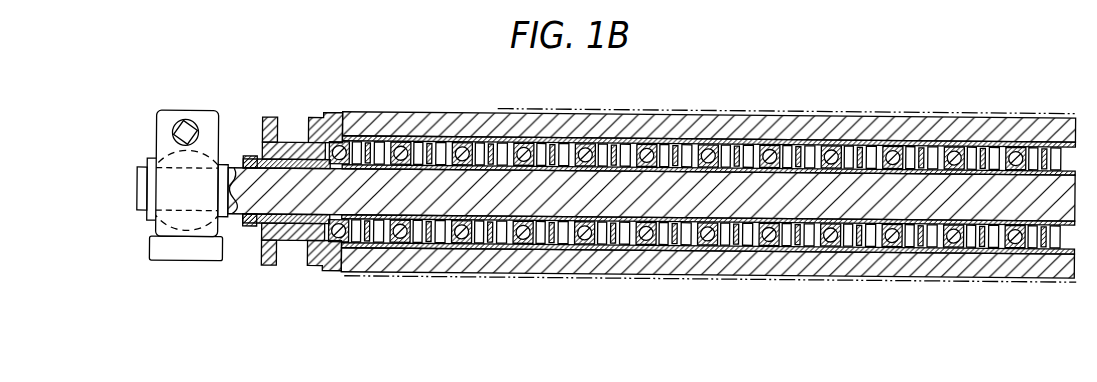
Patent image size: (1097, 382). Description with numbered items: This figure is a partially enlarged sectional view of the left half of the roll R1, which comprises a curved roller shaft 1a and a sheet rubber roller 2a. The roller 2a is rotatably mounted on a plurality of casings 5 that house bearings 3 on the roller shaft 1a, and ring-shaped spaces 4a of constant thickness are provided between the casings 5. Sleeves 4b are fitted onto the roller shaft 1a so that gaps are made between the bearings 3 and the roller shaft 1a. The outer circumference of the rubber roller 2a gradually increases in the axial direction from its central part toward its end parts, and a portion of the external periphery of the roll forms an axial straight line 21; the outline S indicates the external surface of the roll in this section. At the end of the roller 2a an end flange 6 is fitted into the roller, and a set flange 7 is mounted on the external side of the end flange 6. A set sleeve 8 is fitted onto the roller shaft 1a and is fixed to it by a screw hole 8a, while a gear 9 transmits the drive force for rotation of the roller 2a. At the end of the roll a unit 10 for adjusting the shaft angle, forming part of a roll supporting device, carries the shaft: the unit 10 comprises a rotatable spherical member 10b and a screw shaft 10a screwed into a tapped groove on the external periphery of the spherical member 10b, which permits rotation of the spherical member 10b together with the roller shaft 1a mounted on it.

The curved roller shaft 1a is at (652, 203).
The sheet rubber roller 2a is at (585, 268).
The straight line 21 is at (460, 113).
The bearings 3 is at (523, 234).
The ring-shaped spaces 4a is at (490, 238).
The sleeves 4b is at (498, 232).
The casings 5 is at (402, 249).
The end flanges 6 is at (333, 263).
The set flanges 7 is at (295, 245).
The set sleeves 8 is at (245, 161).
The screw holes 8a is at (247, 224).
The gears 9 is at (272, 271).
The units for adjusting the shaft angle 10 is at (182, 256).
The screw shafts 10a is at (186, 128).
The rotatable spherical members 10b is at (152, 158).
The spindle outline S is at (866, 107).
The roll R1 is at (778, 275).